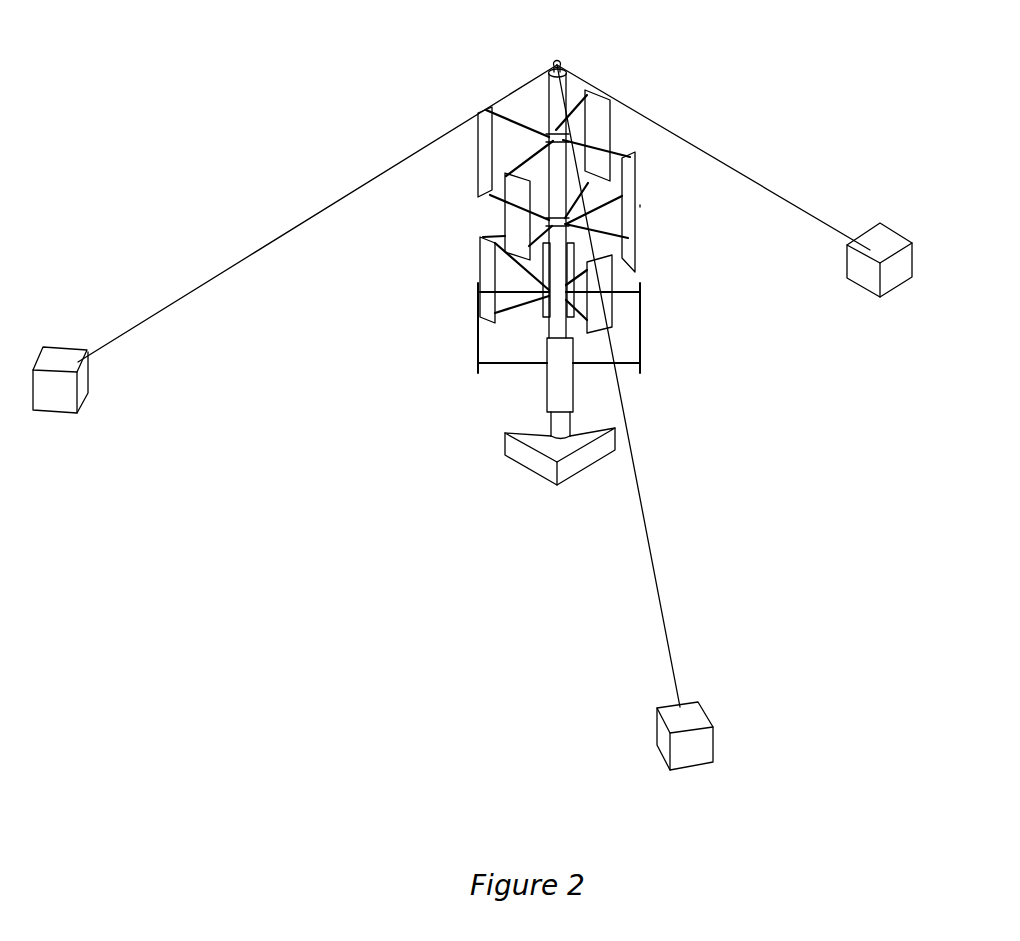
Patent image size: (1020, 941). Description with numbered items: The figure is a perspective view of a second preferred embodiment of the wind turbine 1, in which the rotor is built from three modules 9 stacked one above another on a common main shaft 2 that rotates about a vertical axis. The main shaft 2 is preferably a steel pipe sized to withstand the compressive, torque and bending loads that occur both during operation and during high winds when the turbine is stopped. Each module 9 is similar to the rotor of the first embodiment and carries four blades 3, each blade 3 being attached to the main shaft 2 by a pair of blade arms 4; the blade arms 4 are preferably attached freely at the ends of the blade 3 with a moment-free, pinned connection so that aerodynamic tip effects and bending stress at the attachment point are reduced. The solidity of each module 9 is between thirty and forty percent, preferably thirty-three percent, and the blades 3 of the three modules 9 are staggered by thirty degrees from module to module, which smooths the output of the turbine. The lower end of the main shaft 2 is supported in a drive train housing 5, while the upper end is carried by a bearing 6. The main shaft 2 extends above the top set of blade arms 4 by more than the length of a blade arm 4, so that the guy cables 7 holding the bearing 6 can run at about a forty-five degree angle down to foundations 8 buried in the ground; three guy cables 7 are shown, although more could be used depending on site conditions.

The wind turbine 1 is at (428, 426).
The main shaft 2 is at (556, 166).
The blade 3 is at (478, 176).
The blade arm 4 is at (527, 117).
The drive train housing 5 is at (540, 482).
The bearing 6 is at (555, 60).
The guy cable 7 is at (356, 184).
The foundation 8 is at (60, 356).
The module 9 is at (647, 205).